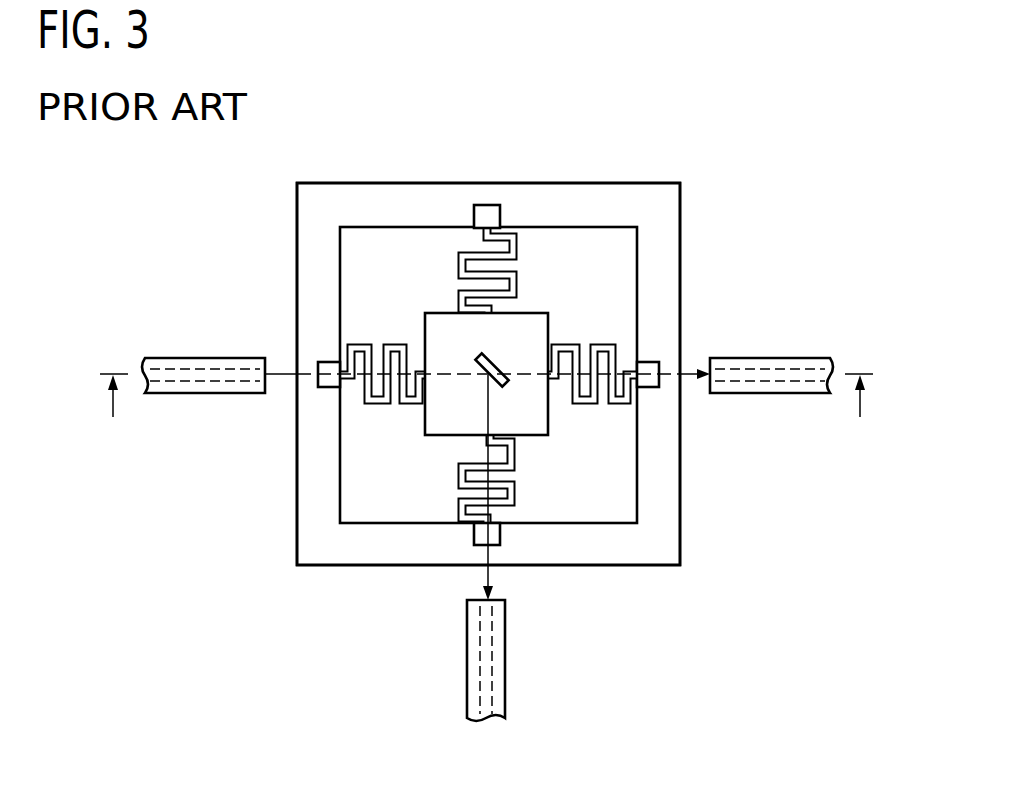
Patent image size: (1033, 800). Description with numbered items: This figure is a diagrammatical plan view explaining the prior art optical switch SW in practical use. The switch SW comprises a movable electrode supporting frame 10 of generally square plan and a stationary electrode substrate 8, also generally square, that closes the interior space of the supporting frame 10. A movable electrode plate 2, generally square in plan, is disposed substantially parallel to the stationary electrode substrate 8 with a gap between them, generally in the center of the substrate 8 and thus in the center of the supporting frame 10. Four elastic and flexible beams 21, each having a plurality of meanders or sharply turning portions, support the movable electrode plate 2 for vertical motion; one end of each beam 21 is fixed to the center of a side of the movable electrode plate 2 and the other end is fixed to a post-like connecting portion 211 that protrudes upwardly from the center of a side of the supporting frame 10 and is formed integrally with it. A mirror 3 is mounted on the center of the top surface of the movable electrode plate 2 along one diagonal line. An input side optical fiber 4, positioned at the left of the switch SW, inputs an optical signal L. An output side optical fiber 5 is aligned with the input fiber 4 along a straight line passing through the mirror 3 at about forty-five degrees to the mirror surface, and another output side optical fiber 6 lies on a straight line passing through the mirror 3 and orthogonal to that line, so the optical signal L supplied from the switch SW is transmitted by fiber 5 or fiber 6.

The movable electrode plate 2 is at (438, 332).
The mirror 3 is at (497, 356).
The input side optical fiber 4 is at (188, 394).
The output side optical fiber 5 is at (736, 394).
The output side optical fiber 6 is at (467, 677).
The stationary electrode substrate 8 is at (370, 473).
The movable electrode supporting frame 10 is at (632, 548).
The elastic and flexible beam 21 is at (518, 247).
The connecting portion 211 is at (484, 222).
The optical signal L is at (307, 370).
The optical switch SW is at (688, 226).